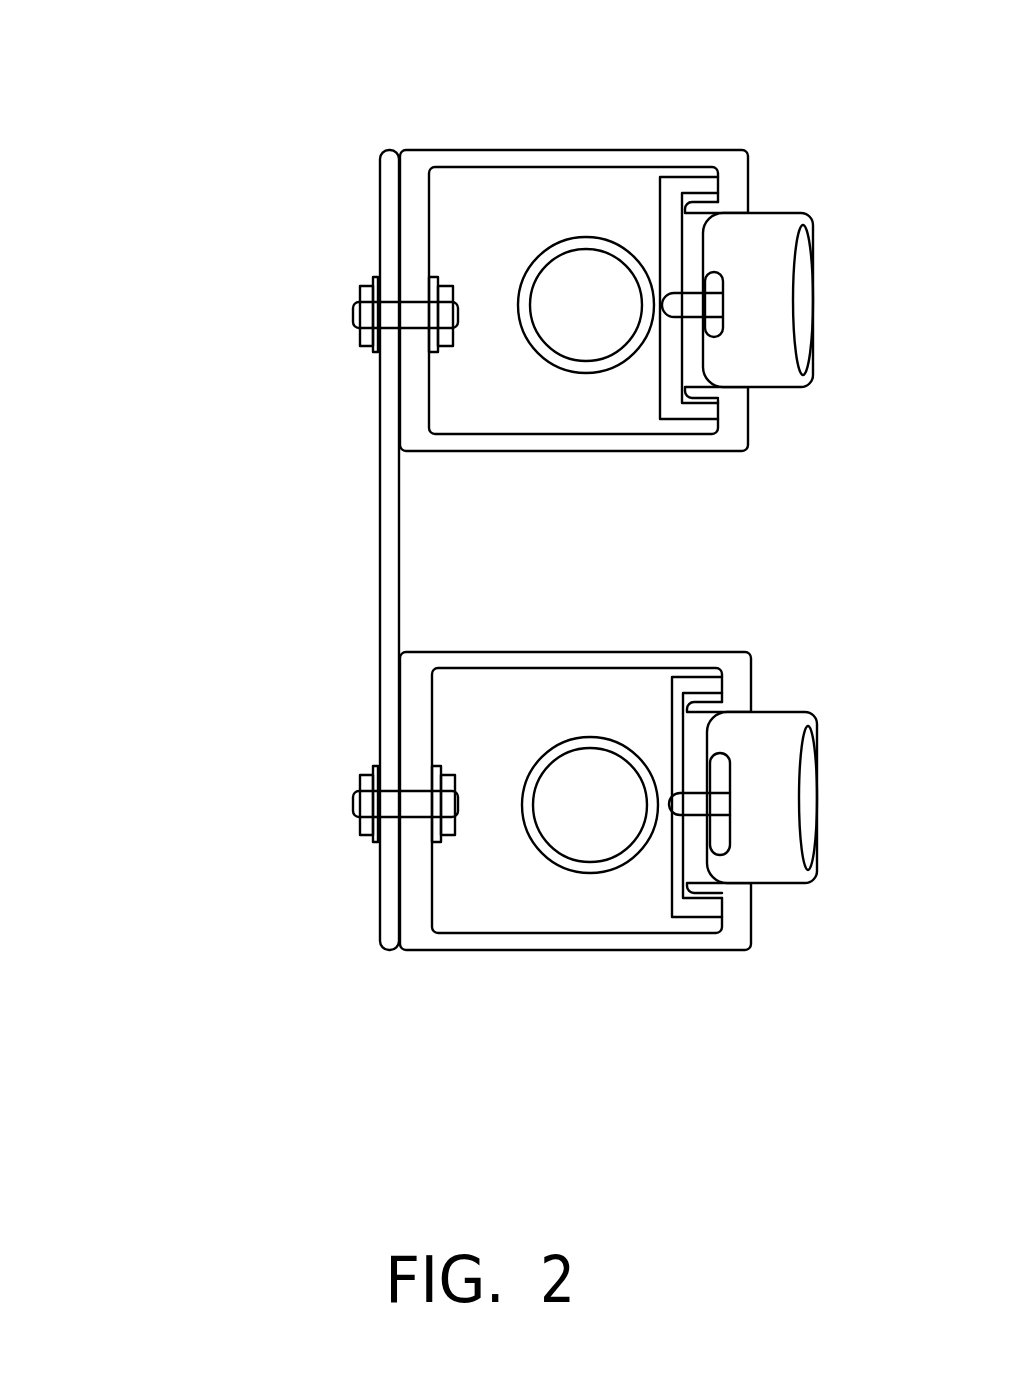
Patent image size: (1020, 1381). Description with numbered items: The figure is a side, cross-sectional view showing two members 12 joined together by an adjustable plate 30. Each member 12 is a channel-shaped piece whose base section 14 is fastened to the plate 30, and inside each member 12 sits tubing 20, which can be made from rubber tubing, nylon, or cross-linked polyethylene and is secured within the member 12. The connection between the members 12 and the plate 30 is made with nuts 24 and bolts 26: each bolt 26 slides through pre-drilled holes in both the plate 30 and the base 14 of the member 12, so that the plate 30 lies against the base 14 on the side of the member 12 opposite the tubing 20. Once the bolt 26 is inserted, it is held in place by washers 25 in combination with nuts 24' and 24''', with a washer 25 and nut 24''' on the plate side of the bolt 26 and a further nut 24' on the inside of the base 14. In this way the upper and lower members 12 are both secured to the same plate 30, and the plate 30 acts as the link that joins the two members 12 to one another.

The member 12 is at (495, 128).
The base section 14 is at (410, 213).
The tubing 20 is at (558, 756).
The nut 24 is at (789, 298).
The nut 24' is at (507, 347).
The nut 24''' is at (295, 310).
The washer 25 is at (372, 351).
The bolt 26 is at (390, 320).
The adjustable plate 30 is at (392, 509).